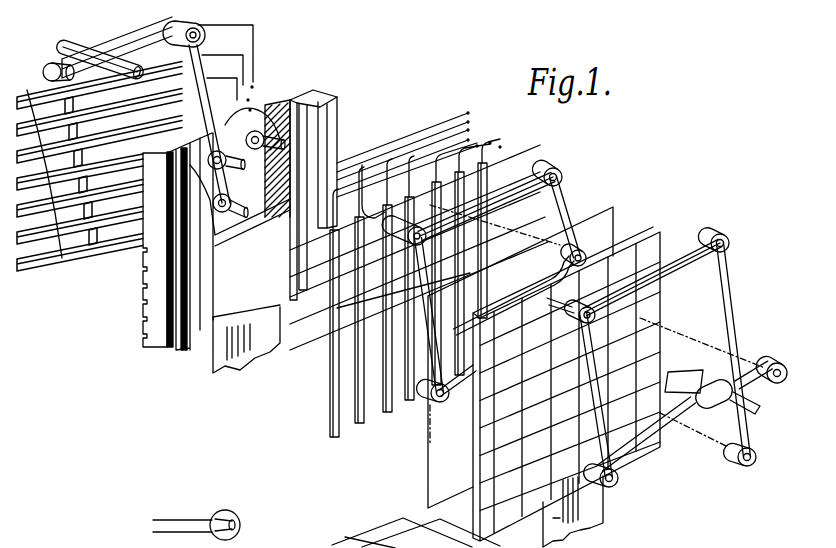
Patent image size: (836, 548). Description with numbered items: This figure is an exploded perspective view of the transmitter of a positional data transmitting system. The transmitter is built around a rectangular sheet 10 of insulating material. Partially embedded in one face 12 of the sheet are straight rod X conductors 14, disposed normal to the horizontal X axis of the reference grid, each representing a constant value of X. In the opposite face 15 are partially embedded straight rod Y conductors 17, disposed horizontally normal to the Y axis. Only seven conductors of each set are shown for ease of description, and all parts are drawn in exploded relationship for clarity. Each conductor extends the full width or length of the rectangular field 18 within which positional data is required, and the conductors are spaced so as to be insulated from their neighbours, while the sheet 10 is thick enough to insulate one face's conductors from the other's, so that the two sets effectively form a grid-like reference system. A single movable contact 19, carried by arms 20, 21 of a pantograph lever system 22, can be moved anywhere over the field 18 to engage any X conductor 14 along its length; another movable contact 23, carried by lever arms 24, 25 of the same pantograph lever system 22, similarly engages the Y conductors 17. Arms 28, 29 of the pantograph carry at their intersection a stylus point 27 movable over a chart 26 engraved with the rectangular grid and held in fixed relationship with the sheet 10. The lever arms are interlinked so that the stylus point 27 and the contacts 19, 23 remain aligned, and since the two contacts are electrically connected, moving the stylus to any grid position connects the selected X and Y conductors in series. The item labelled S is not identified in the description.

The rectangular sheet 10 is at (307, 95).
The face 12 is at (337, 128).
The X conductors 14 is at (468, 220).
The opposite face 15 is at (285, 92).
The Y conductors 17 is at (30, 92).
The rectangular field 18 is at (618, 207).
The movable contact 19 is at (383, 203).
The arm 20 is at (510, 173).
The arm 21 is at (337, 308).
The pantograph lever system 22 is at (757, 433).
The movable contact 23 is at (50, 67).
The lever arm 24 is at (140, 37).
The lever arm 25 is at (54, 186).
The chart 26 is at (668, 247).
The stylus point 27 is at (560, 313).
The arm 28 is at (692, 243).
The arm 29 is at (658, 323).
The pivot shaft S is at (243, 523).